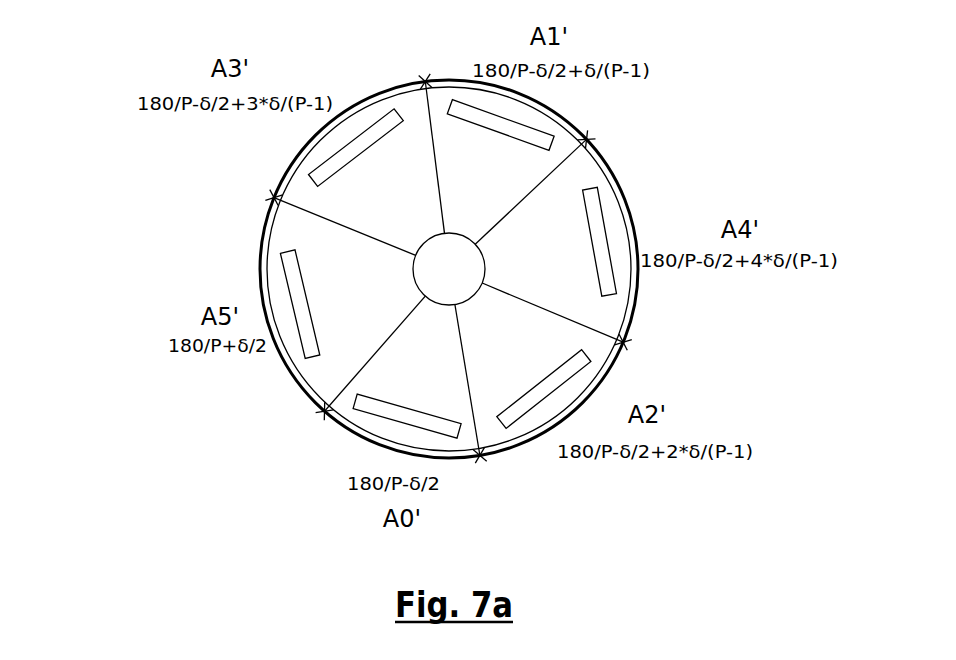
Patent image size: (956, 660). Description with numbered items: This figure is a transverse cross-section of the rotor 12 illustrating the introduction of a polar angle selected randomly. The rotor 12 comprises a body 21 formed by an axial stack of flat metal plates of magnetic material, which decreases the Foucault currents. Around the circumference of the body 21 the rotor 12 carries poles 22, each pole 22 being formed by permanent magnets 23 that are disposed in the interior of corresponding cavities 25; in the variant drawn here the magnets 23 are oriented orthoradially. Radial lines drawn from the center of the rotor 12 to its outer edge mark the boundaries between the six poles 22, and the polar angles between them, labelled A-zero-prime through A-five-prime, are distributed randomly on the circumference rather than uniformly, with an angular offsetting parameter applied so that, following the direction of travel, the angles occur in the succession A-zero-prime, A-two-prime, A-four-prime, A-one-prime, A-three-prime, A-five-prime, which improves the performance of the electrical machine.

The rotor 12 is at (128, 242).
The body 21 is at (327, 255).
The poles 22 is at (613, 212).
The permanent magnets 23 is at (362, 398).
The cavities 25 is at (325, 155).